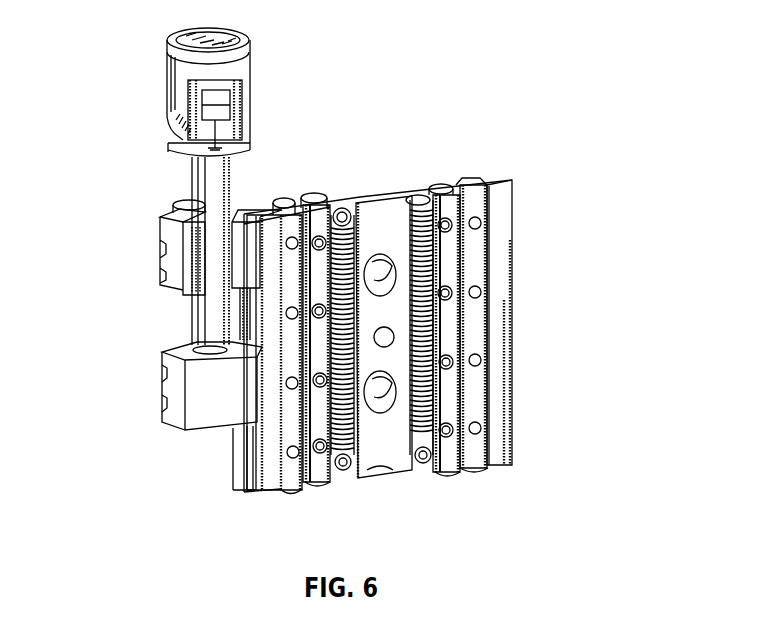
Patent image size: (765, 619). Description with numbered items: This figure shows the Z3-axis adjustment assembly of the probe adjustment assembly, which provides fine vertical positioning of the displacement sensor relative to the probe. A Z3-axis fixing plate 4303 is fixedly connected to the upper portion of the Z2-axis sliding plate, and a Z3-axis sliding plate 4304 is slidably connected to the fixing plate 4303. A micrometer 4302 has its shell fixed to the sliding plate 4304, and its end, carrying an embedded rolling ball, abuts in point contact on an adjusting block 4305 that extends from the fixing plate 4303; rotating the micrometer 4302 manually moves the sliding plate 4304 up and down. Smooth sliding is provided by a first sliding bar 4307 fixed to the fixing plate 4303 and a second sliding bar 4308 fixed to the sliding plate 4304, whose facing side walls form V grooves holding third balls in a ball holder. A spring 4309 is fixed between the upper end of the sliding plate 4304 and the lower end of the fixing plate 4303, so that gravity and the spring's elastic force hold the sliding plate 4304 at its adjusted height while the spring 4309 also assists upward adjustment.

The micrometer 4302 is at (178, 88).
The Z3-axis fixing plate 4303 is at (388, 195).
The Z3-axis sliding plate 4304 is at (273, 452).
The adjusting block 4305 is at (218, 398).
The first sliding bar 4307 is at (448, 205).
The second sliding bar 4308 is at (293, 472).
The spring 4309 is at (470, 447).